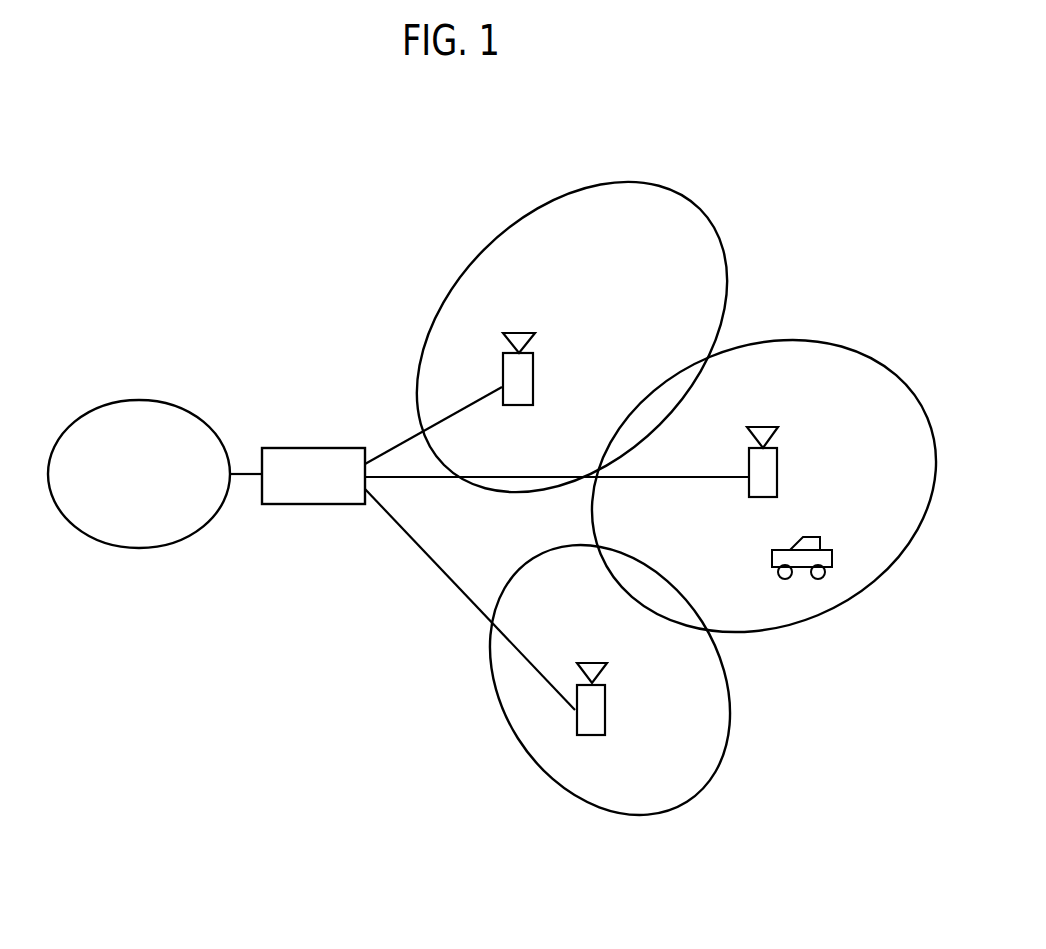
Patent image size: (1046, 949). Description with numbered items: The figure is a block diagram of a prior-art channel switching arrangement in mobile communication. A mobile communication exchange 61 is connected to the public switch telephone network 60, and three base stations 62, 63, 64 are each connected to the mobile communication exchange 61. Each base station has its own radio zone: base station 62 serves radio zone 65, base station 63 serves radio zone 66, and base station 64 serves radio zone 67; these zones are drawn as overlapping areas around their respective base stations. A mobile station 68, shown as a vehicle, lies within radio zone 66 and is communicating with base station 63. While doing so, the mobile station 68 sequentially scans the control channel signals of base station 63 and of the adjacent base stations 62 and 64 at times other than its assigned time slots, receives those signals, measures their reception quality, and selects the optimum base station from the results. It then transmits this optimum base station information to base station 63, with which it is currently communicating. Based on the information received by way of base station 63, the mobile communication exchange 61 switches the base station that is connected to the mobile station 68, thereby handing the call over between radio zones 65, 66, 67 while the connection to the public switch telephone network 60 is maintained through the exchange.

The public switch telephone network 60 is at (168, 402).
The mobile communication exchange 61 is at (315, 448).
The base station 62 is at (535, 378).
The base station 63 is at (778, 473).
The base station 64 is at (607, 708).
The radio zone 65 is at (710, 220).
The radio zone 66 is at (863, 352).
The radio zone 67 is at (730, 695).
The mobile station 68 is at (823, 540).